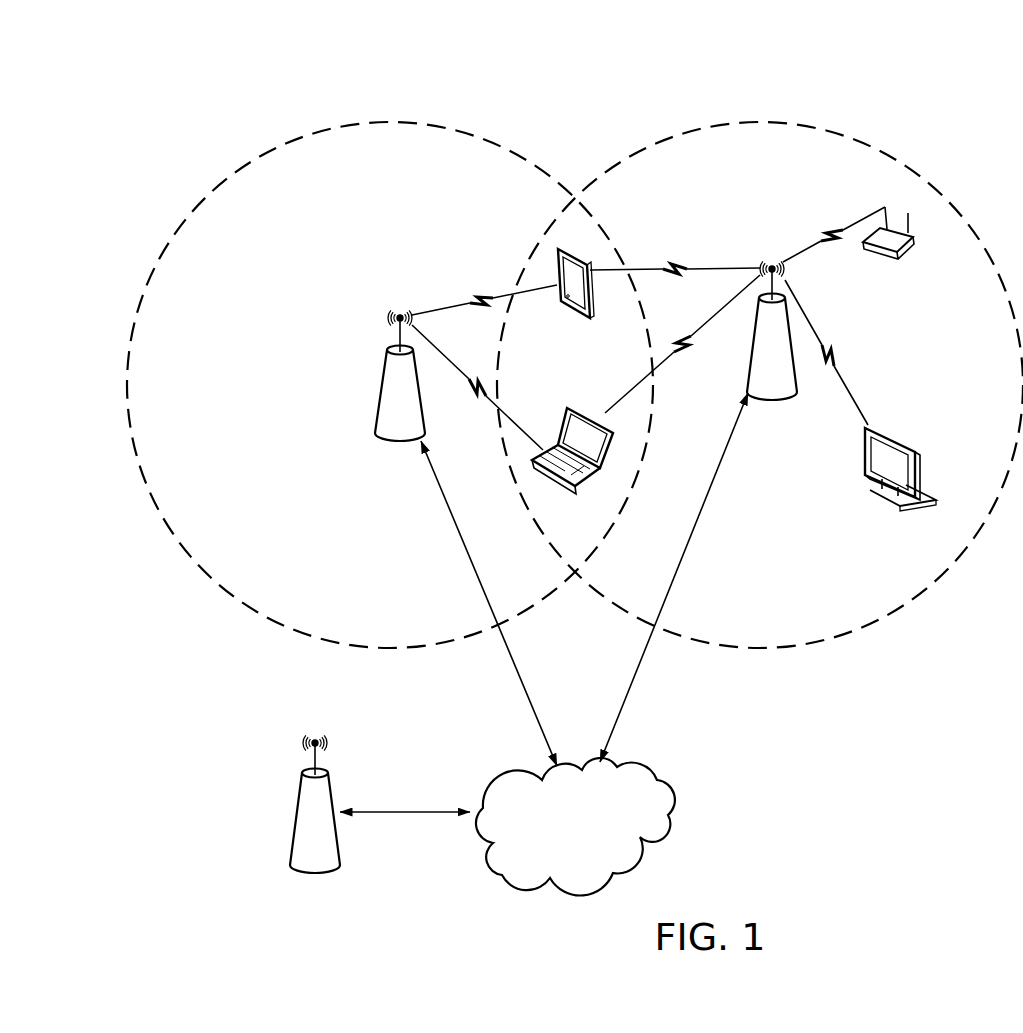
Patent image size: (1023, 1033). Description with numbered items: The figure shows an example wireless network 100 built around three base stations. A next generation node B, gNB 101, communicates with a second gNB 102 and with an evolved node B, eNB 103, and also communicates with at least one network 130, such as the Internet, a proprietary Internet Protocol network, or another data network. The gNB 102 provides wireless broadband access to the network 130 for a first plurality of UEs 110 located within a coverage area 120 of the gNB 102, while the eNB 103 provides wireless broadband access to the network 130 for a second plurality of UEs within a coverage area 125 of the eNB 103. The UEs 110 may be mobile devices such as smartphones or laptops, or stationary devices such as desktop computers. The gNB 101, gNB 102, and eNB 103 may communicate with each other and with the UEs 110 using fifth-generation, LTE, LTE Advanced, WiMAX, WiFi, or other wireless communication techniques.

The wireless network 100 is at (69, 71).
The gNB 101 is at (315, 874).
The gNB 102 is at (772, 401).
The eNB 103 is at (400, 442).
The UEs 110 is at (568, 317).
The coverage area 120 is at (782, 649).
The coverage area 125 is at (383, 649).
The network 130 is at (565, 851).